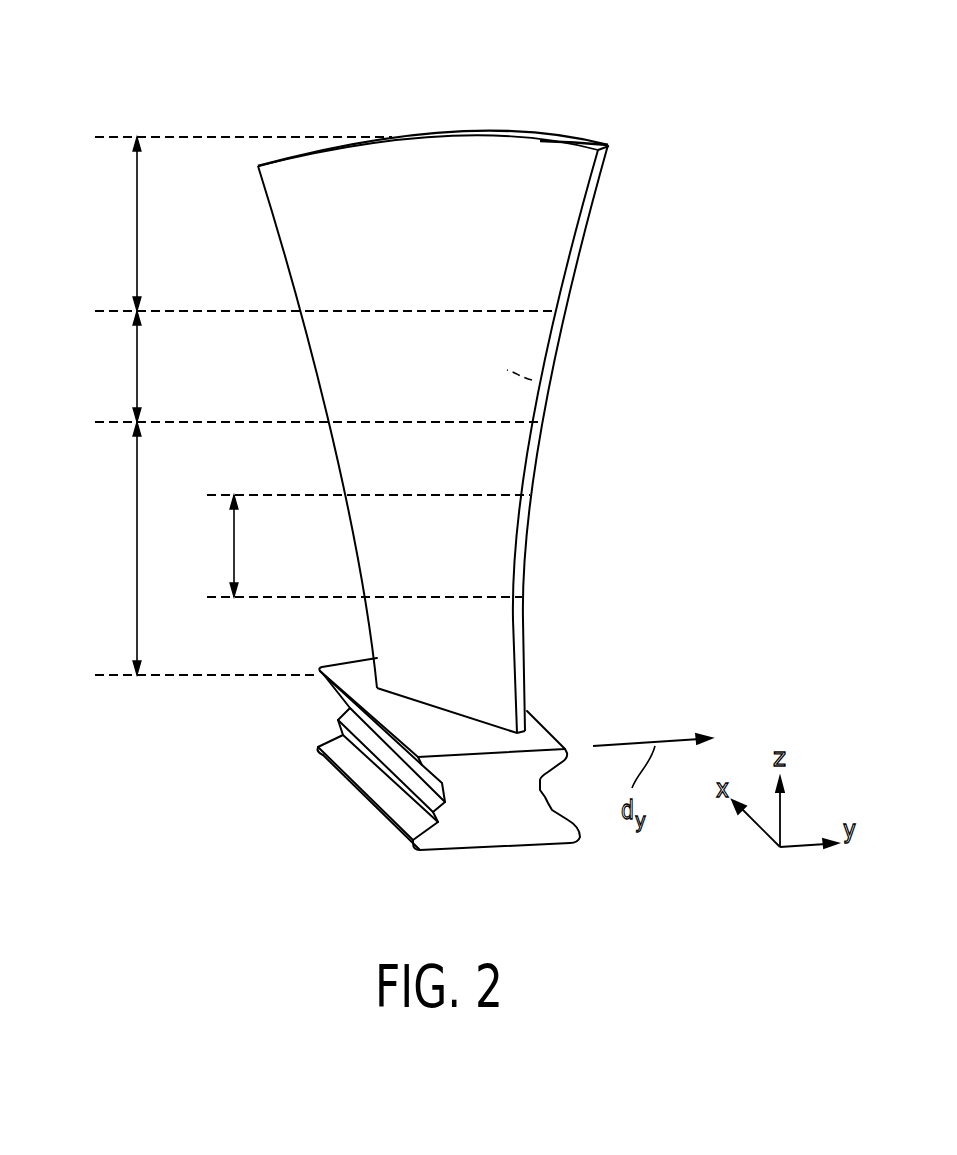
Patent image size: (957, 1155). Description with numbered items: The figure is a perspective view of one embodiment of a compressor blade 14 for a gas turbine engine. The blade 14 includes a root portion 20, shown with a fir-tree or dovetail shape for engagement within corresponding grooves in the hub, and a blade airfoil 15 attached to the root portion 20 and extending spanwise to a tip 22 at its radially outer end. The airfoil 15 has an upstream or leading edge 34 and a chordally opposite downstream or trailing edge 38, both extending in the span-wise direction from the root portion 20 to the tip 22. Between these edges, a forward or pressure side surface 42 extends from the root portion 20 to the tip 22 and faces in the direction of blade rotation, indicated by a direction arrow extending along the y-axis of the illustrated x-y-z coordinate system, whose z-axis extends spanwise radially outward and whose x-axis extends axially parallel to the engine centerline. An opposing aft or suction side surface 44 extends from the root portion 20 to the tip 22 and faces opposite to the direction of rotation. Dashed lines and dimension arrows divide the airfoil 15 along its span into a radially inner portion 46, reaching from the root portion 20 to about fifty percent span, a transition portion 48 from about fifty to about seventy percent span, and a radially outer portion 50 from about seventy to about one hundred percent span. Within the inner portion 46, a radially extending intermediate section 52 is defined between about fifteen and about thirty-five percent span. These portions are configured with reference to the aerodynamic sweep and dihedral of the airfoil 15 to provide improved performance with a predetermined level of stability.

The compressor blade 14 is at (433, 74).
The blade airfoil 15 is at (298, 151).
The root portion 20 is at (520, 828).
The tip 22 is at (552, 140).
The leading edge 34 is at (563, 292).
The trailing edge 38 is at (278, 228).
The pressure side surface 42 is at (532, 380).
The suction side surface 44 is at (563, 208).
The radially inner portion 46 is at (136, 555).
The transition portion 48 is at (136, 368).
The radially outer portion 50 is at (136, 227).
The intermediate section 52 is at (233, 543).